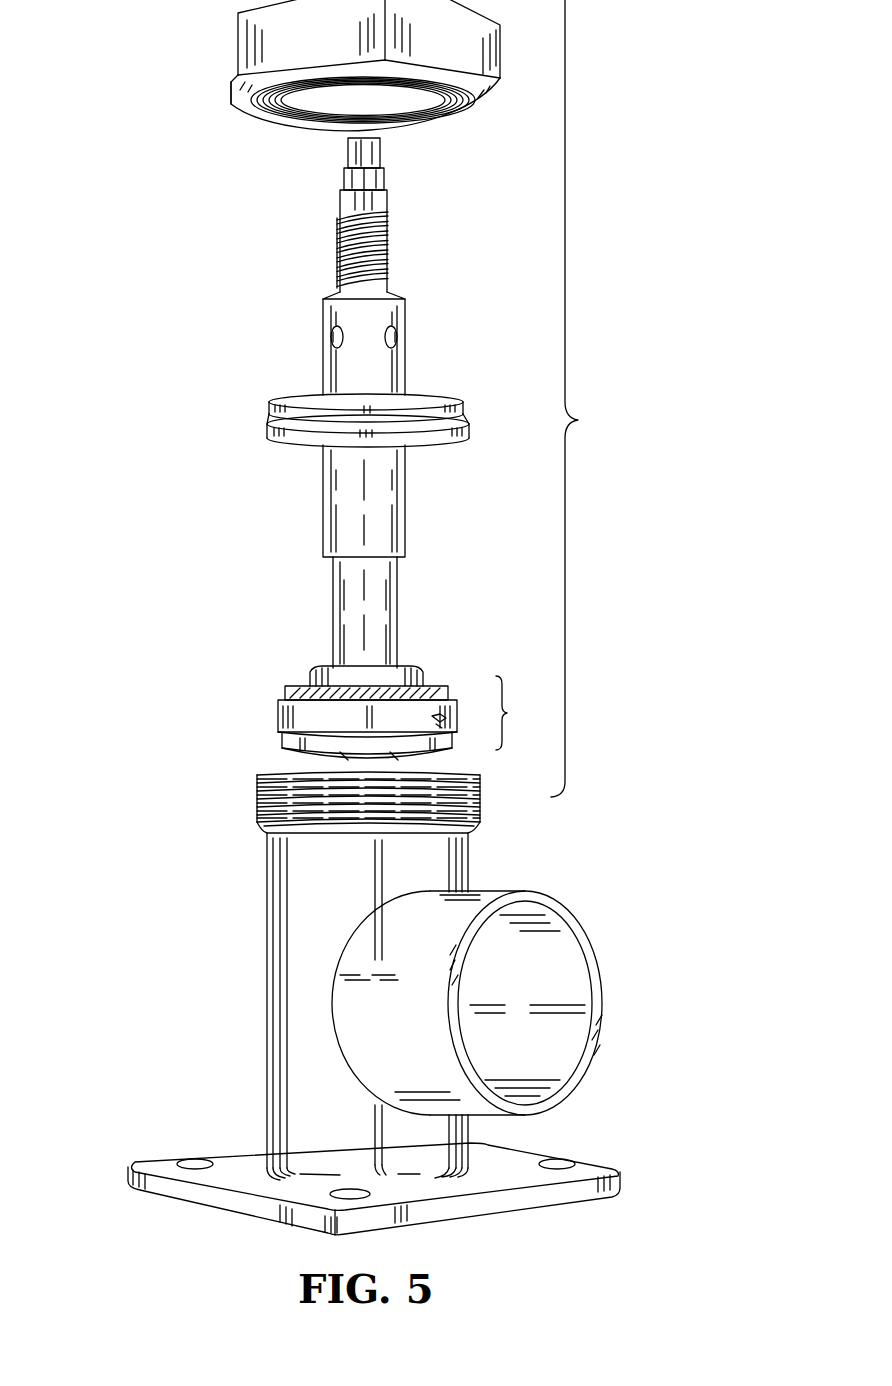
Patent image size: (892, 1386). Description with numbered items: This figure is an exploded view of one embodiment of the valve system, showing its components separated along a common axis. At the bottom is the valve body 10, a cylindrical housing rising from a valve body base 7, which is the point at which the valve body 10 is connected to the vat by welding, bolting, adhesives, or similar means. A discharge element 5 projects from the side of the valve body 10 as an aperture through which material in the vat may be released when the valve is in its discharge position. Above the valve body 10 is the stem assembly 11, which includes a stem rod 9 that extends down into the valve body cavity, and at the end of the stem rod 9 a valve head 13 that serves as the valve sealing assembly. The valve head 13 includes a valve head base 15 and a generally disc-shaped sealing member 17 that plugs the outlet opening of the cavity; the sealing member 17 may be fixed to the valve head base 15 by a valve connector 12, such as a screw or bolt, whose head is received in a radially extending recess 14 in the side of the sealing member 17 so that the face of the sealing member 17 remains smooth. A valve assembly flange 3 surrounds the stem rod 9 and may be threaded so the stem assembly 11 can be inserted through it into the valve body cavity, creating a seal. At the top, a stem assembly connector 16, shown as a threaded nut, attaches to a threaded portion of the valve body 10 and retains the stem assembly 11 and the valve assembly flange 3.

The valve assembly flange 3 is at (268, 418).
The discharge element 5 is at (563, 906).
The valve body base 7 is at (607, 1183).
The stem rod 9 is at (345, 573).
The valve body 10 is at (379, 1003).
The stem assembly 11 is at (588, 398).
The valve connector 12 is at (318, 668).
The valve head 13 is at (519, 713).
The recess 14 is at (450, 718).
The valve head base 15 is at (292, 690).
The stem assembly connector 16 is at (248, 50).
The sealing member 17 is at (298, 713).